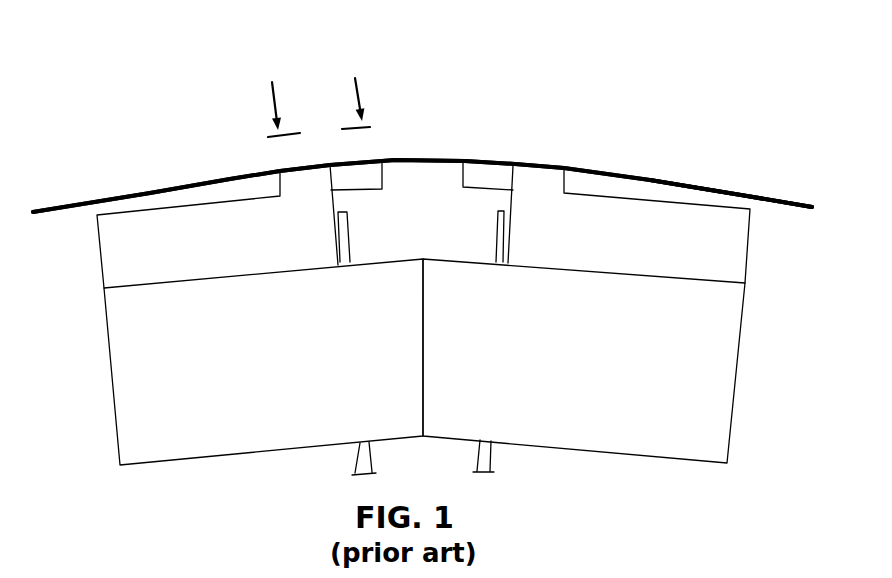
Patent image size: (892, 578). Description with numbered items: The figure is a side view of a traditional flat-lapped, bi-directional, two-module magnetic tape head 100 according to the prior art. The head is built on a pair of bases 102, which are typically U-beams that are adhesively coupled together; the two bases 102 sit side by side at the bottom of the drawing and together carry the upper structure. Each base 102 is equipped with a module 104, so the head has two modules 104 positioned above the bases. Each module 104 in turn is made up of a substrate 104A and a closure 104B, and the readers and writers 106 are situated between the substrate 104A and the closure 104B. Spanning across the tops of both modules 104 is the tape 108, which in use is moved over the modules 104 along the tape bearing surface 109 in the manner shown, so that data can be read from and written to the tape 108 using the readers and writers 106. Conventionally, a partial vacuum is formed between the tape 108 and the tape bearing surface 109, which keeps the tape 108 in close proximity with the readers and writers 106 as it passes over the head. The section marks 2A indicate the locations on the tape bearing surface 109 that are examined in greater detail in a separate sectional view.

The prior art flexible circuit assembly 100 is at (198, 128).
The rigid substrate blocks 102 is at (107, 353).
The upper component blocks 104 is at (97, 258).
The left upper block 104A is at (158, 233).
The right small block 104B is at (466, 182).
The flexible film 106 is at (517, 150).
The film end portion 108 is at (745, 193).
The coating layer on film 109 is at (290, 154).
The section line 2A is at (311, 94).